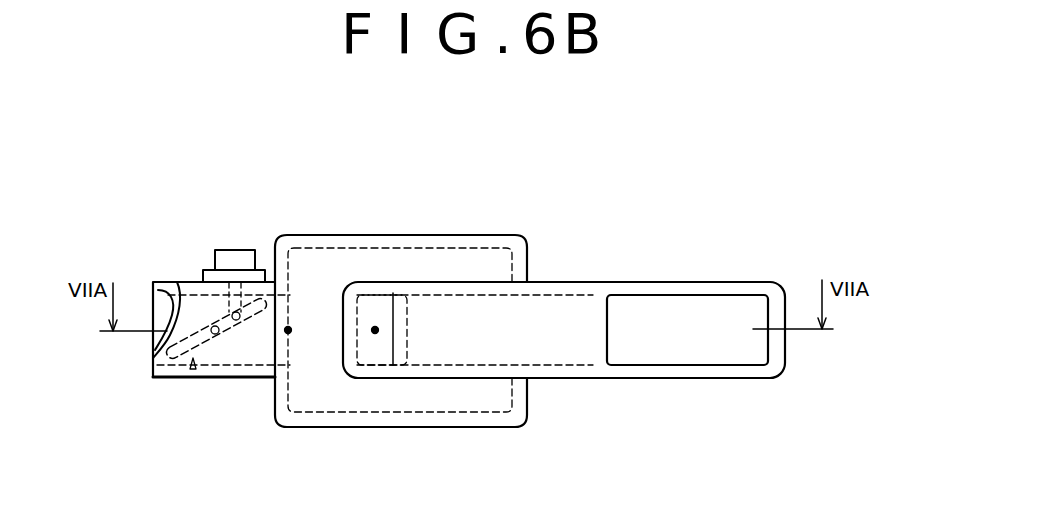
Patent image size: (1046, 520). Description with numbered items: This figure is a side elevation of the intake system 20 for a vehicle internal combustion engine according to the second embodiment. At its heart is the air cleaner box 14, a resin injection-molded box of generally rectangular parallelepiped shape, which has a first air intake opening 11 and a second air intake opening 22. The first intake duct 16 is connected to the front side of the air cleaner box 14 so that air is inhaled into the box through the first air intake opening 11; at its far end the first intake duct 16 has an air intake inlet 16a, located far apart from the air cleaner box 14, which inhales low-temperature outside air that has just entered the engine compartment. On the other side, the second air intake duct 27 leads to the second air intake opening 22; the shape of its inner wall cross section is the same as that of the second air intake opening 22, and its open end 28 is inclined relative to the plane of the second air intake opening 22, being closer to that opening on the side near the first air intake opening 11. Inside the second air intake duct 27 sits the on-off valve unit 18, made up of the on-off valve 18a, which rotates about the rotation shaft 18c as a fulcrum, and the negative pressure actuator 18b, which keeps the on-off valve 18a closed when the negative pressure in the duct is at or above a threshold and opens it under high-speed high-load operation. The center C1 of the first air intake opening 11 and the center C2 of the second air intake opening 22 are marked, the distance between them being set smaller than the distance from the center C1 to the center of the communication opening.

The first air intake opening 11 is at (377, 356).
The air cleaner box 14 is at (367, 235).
The first intake duct 16 is at (562, 282).
The air intake inlet 16a is at (692, 322).
The on-off valve unit 18 is at (193, 370).
The on-off valve 18a is at (218, 350).
The negative pressure actuator 18b is at (233, 250).
The rotation shaft 18c is at (218, 350).
The intake system 20 is at (625, 178).
The second air intake opening 22 is at (290, 318).
The second air intake duct 27 is at (178, 282).
The open end 28 is at (153, 333).
The center of the first air intake opening C1 is at (379, 330).
The center of the second air intake opening C2 is at (290, 333).